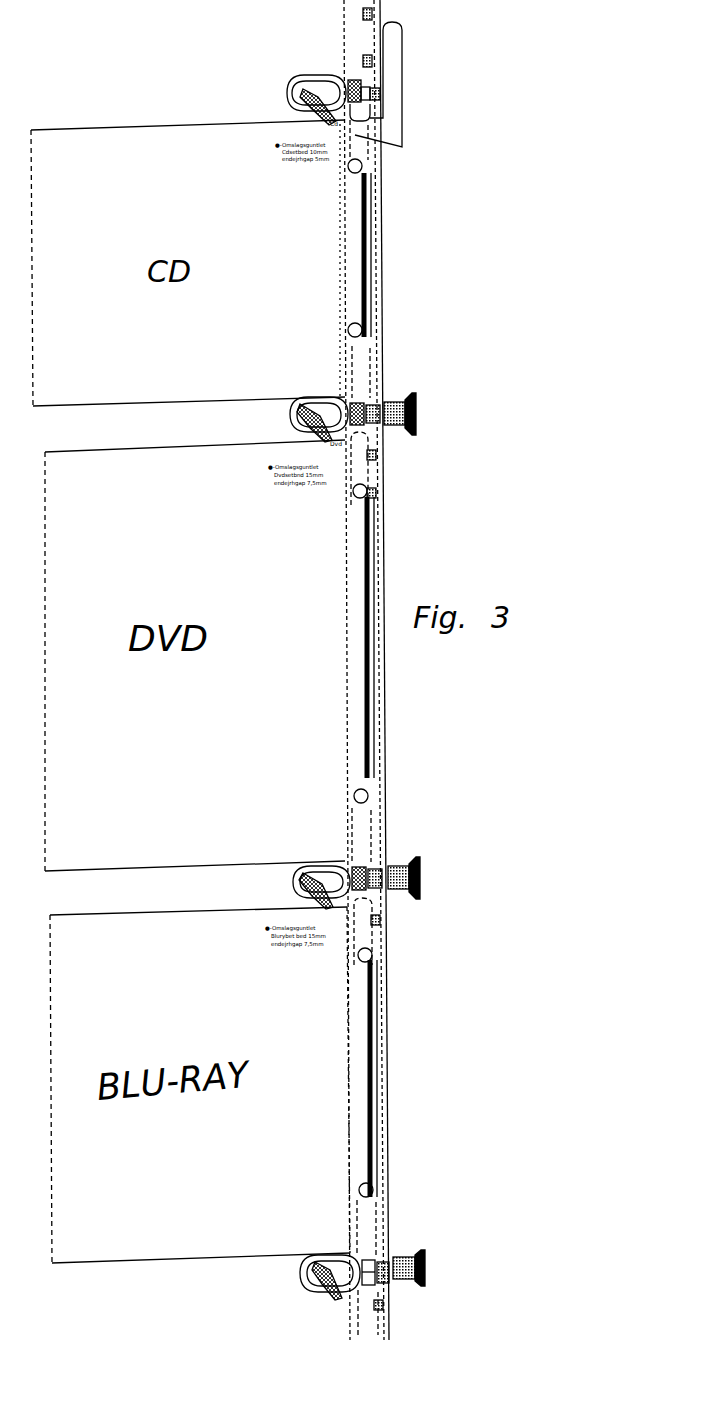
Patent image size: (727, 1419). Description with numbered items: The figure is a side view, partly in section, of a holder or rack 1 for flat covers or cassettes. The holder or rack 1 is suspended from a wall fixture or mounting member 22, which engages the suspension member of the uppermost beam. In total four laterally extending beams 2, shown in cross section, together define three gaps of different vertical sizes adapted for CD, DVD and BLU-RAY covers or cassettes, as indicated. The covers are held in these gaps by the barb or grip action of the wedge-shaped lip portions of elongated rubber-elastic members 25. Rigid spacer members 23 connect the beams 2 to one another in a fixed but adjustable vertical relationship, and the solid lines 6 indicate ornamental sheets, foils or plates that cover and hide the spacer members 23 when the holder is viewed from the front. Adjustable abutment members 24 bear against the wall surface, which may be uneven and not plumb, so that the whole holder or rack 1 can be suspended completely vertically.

The holder or rack 1 is at (424, 259).
The beam 2 is at (344, 74).
The ornamental sheets, foils or plates 6 is at (367, 292).
The wall fixture or mounting member 22 is at (390, 70).
The rigid spacer member 23 is at (375, 200).
The adjustable abutment member 24 is at (418, 411).
The elongated rubber-elastic member 25 is at (287, 93).